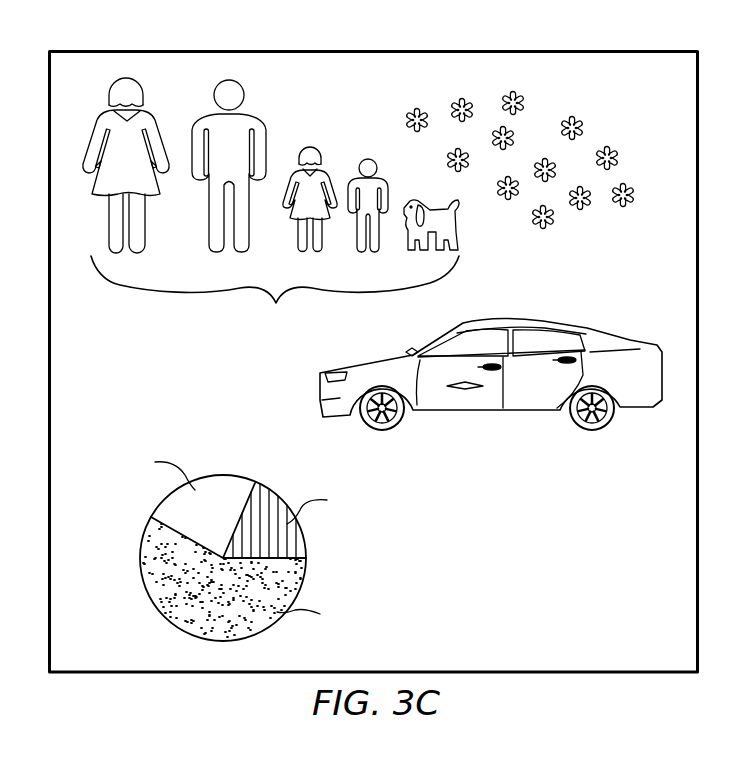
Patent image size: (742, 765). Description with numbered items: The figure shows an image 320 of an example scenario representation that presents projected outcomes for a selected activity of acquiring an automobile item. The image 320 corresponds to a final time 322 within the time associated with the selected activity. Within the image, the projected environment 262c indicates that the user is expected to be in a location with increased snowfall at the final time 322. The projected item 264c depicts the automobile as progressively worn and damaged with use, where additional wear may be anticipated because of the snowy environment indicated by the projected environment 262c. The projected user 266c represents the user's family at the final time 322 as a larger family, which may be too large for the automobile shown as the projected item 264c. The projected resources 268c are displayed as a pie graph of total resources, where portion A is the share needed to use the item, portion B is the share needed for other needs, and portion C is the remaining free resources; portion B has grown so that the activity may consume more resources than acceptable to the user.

The image 320 is at (620, 24).
The final time 322 is at (393, 27).
The projected environment 262c is at (585, 111).
The projected item 264c is at (587, 329).
The projected user 266c is at (271, 203).
The projected resources 268c is at (248, 468).